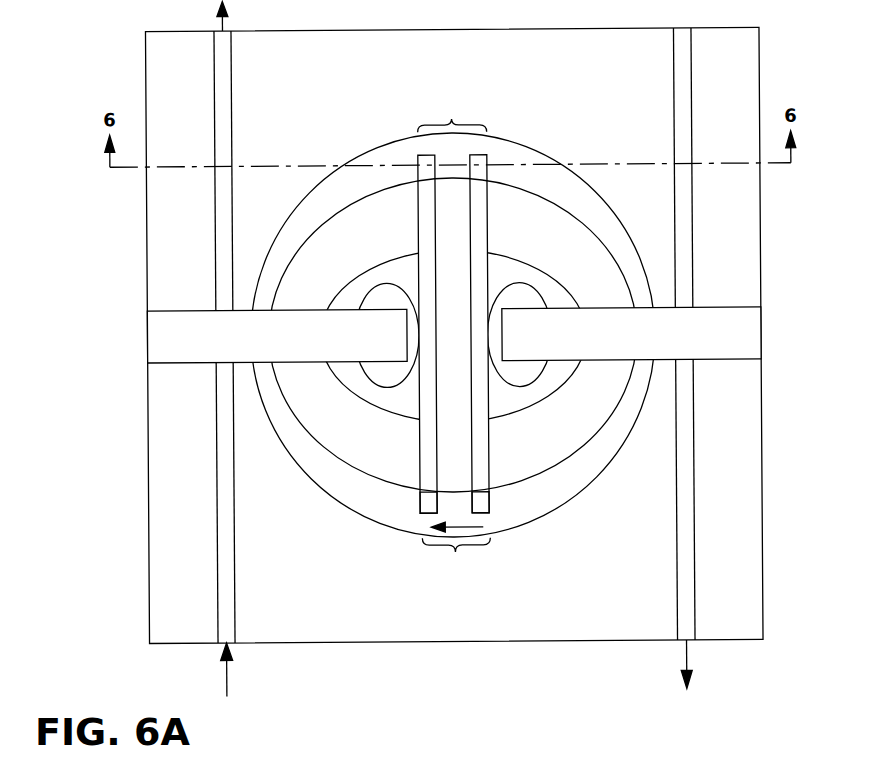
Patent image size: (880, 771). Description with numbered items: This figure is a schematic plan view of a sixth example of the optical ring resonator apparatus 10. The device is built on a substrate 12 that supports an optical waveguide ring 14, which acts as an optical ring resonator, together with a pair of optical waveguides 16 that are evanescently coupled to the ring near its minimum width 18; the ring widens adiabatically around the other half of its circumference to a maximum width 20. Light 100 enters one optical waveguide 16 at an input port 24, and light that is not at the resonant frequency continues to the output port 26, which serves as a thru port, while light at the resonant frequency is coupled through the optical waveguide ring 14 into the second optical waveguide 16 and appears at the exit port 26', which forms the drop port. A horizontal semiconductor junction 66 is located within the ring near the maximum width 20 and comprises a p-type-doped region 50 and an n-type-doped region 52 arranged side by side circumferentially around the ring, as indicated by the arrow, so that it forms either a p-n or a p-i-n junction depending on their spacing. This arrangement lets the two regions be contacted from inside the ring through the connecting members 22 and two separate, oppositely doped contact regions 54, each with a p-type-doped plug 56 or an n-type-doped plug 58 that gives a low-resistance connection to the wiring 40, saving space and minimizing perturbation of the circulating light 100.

The optical ring resonator apparatus 10 is at (731, 658).
The substrate 12 is at (148, 593).
The optical waveguide ring 14 is at (613, 463).
The optical waveguide 16 is at (236, 556).
The minimum width 18 is at (272, 306).
The maximum width 20 is at (455, 178).
The connecting member 22 is at (419, 446).
The input port 24 is at (239, 637).
The output port 26 is at (248, 44).
The exit port 26' is at (717, 625).
The wiring 40 is at (454, 335).
The p-type-doped region 50 is at (428, 505).
The n-type-doped region 52 is at (479, 505).
The contact region 54 is at (352, 401).
The p-type-doped plug 56 is at (407, 373).
The n-type-doped plug 58 is at (499, 373).
The horizontal semiconductor junction 66 is at (453, 337).
The light 100 is at (233, 670).